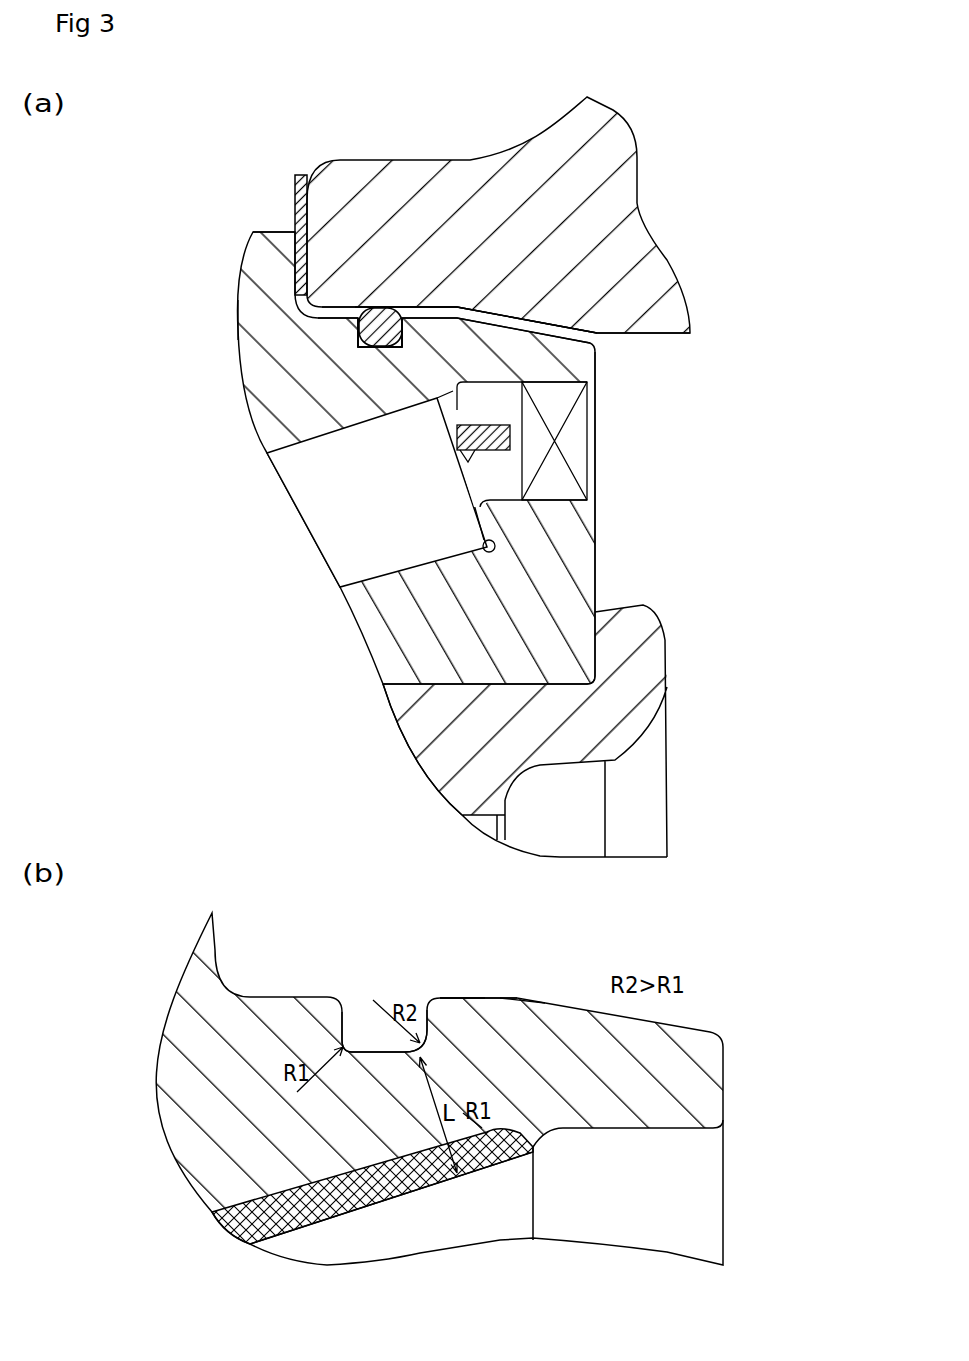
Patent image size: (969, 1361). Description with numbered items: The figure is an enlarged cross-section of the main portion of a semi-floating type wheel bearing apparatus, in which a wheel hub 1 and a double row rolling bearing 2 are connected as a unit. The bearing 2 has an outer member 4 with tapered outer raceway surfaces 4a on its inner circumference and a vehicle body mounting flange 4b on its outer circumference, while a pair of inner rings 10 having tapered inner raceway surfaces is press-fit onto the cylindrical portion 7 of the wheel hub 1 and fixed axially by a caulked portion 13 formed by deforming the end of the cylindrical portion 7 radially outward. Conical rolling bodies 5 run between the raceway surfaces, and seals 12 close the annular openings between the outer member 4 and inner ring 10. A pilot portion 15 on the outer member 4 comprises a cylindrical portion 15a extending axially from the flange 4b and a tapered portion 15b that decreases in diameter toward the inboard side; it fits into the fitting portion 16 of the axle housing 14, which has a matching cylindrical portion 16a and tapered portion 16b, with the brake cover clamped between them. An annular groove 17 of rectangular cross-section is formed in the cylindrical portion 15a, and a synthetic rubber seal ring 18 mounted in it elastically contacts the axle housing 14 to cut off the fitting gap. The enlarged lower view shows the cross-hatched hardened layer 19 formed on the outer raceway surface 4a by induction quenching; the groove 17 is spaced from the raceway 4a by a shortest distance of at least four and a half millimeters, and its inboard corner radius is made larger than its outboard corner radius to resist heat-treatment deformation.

In FIG. 3a, the wheel hub 1 is at (390, 752).
In FIG. 3a, the double row rolling bearing 2 is at (220, 277).
In FIG. 3a, the outer member 4 is at (243, 390).
In FIG. 3b, the outer member 4 is at (163, 1091).
In FIG. 3b, the outer raceway surface 4a is at (317, 1223).
In FIG. 3a, the vehicle body mounting flange 4b is at (259, 297).
In FIG. 3a, the rolling bodies 5 is at (300, 480).
In FIG. 3a, the cylindrical portion 7 is at (488, 682).
In FIG. 3a, the inner ring 10 is at (390, 625).
In FIG. 3a, the seal 12 is at (557, 475).
In FIG. 3a, the caulked portion 13 is at (643, 670).
In FIG. 3a, the axle housing 14 is at (583, 170).
In FIG. 3a, the pilot portion 15 is at (423, 467).
In FIG. 3b, the pilot portion 15 is at (528, 916).
In FIG. 3a, the cylindrical portion 15a is at (360, 318).
In FIG. 3b, the cylindrical portion 15a is at (472, 998).
In FIG. 3a, the tapered portion 15b is at (425, 310).
In FIG. 3b, the tapered portion 15b is at (538, 998).
In FIG. 3a, the fitting portion 16 is at (484, 113).
In FIG. 3a, the cylindrical portion 16a is at (416, 318).
In FIG. 3a, the tapered portion 16b is at (480, 337).
In FIG. 3a, the annular groove 17 is at (388, 340).
In FIG. 3b, the annular groove 17 is at (360, 1027).
In FIG. 3a, the seal ring 18 is at (379, 330).
In FIG. 3b, the hardened layer 19 is at (250, 1226).